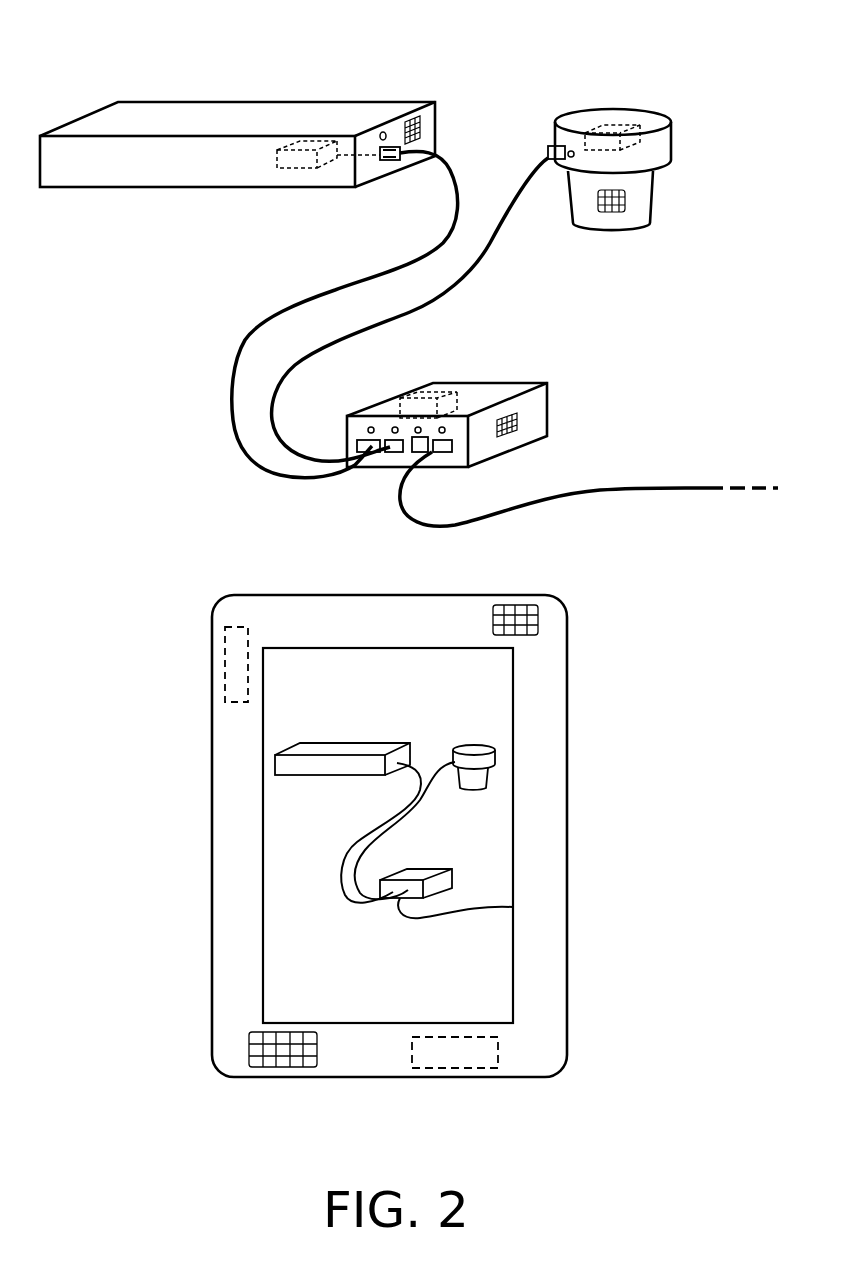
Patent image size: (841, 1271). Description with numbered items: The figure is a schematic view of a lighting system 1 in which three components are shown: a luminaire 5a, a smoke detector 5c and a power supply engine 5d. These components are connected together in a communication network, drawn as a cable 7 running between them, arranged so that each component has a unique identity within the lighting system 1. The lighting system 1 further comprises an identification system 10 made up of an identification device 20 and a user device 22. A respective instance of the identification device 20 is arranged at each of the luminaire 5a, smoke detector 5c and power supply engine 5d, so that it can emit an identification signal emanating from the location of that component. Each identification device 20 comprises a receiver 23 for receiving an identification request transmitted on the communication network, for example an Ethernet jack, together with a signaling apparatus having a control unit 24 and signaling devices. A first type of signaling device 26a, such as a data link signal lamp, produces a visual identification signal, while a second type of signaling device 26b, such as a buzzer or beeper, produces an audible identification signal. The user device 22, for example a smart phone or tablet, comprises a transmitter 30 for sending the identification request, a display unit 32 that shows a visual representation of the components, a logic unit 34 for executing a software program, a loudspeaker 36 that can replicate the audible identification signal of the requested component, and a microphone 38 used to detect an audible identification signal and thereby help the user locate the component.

The lighting system 1 is at (108, 1141).
The luminaire 5a is at (163, 113).
The smoke detector 5c is at (665, 145).
The power supply engine 5d is at (540, 412).
The cable 7 is at (228, 397).
The identification system 10 is at (160, 970).
The identification device 20 is at (152, 477).
The user device 22 is at (568, 917).
The receiver 23 is at (383, 163).
The control unit 24 is at (302, 170).
The first type of signaling device 26a is at (383, 131).
The second type of signaling device 26b is at (418, 117).
The transmitter 30 is at (225, 657).
The display unit 32 is at (480, 850).
The logic unit 34 is at (462, 1070).
The loudspeaker 36 is at (283, 1070).
The microphone 38 is at (540, 620).